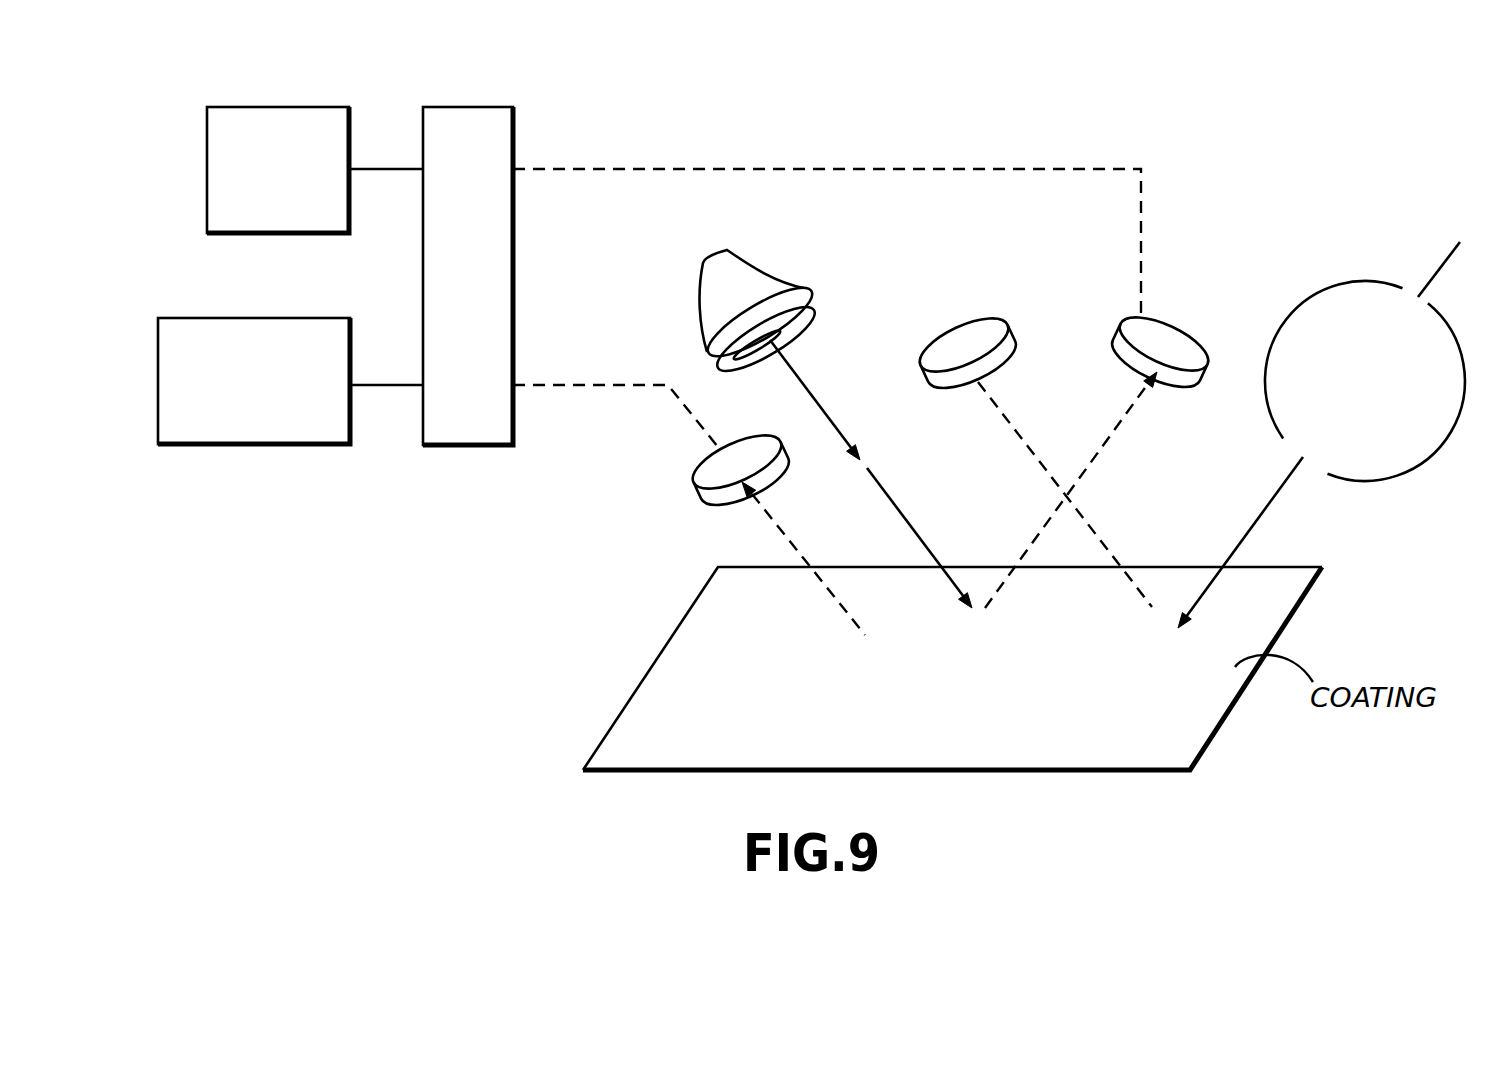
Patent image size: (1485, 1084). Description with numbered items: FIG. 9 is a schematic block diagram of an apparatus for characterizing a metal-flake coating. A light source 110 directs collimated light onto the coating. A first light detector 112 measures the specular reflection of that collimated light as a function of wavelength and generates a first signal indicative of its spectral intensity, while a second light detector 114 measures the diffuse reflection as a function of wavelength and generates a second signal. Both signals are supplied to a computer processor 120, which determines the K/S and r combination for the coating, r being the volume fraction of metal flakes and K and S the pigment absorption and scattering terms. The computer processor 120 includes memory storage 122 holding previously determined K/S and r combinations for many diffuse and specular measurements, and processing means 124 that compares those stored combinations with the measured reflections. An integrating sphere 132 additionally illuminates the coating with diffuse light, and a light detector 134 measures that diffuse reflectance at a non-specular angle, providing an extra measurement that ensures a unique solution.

The light source 110 is at (727, 250).
The first light detector 112 is at (1148, 318).
The second light detector 114 is at (697, 475).
The computer processor 120 is at (496, 106).
The memory storage 122 is at (329, 106).
The processing means 124 is at (331, 317).
The integrating sphere 132 is at (1337, 280).
The light detector 134 is at (973, 320).